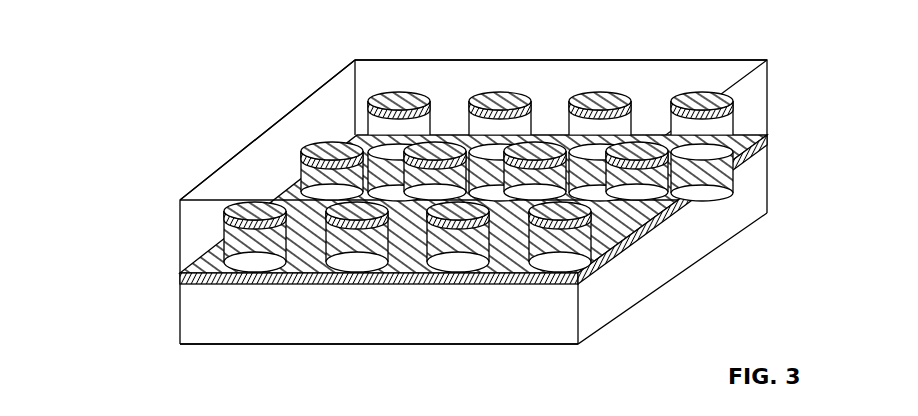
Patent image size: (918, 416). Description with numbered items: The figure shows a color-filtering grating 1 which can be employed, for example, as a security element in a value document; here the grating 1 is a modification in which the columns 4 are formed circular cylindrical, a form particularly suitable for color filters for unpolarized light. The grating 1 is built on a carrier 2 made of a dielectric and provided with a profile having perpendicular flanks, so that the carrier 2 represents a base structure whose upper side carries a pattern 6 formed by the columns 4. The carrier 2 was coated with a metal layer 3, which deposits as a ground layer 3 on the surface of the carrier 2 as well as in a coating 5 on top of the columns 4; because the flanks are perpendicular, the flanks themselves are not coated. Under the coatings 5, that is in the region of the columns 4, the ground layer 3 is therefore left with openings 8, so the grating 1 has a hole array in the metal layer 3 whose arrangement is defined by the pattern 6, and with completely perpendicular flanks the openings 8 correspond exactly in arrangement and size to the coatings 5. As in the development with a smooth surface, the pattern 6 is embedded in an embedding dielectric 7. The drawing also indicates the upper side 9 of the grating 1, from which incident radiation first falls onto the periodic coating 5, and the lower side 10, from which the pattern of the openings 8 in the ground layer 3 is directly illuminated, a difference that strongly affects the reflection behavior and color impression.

The color-filtering grating 1 is at (140, 143).
The carrier 2 is at (537, 332).
The metal layer 3 is at (497, 278).
The columns 4 is at (728, 127).
The coating 5 is at (706, 110).
The pattern 6 is at (542, 72).
The embedding dielectric 7 is at (276, 133).
The openings 8 is at (262, 265).
The upper side 9 is at (393, 63).
The lower side 10 is at (358, 343).